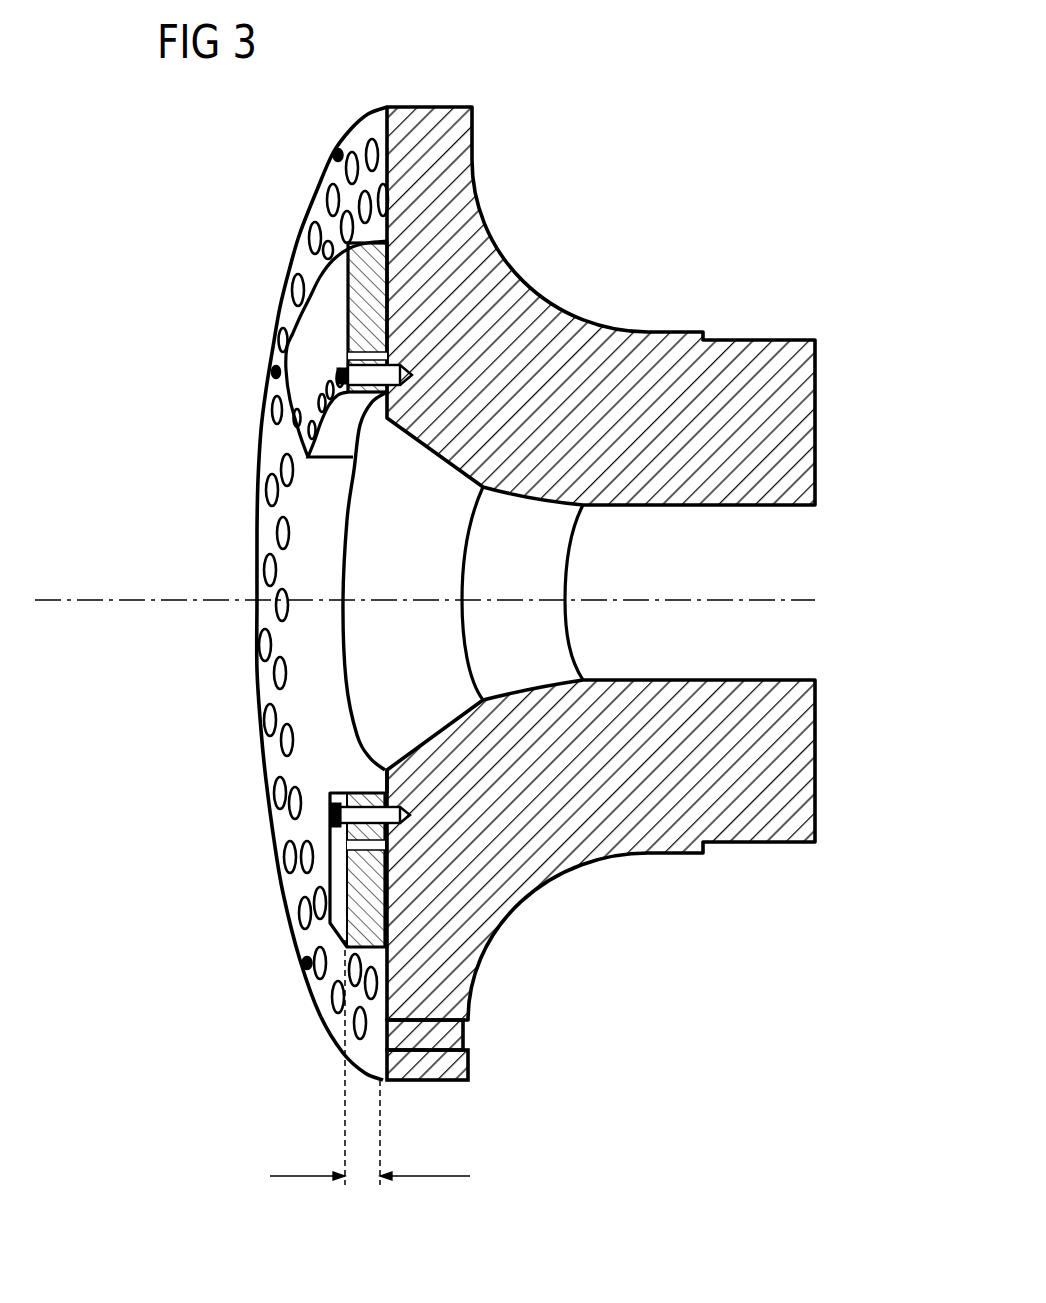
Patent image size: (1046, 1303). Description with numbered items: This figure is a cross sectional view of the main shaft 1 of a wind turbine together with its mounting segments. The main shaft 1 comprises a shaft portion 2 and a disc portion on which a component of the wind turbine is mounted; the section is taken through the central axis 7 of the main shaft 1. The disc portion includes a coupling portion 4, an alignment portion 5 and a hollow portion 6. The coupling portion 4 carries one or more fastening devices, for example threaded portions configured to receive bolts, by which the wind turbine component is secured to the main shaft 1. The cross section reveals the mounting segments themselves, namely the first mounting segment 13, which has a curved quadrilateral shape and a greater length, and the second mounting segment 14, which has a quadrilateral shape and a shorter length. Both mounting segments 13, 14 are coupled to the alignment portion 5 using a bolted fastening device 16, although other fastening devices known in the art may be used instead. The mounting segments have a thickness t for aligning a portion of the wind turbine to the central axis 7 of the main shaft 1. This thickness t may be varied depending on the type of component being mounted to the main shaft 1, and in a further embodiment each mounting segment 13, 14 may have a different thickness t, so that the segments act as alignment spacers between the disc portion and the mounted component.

The main shaft 1 is at (785, 1067).
The shaft portion 2 is at (742, 843).
The coupling portion 4 is at (340, 177).
The alignment portion 5 is at (307, 498).
The hollow portion 6 is at (780, 548).
The central axis 7 is at (143, 603).
The first mounting segment 13 is at (312, 318).
The second mounting segment 14 is at (340, 857).
The fastening device 16 is at (330, 400).
The thickness t is at (360, 1062).